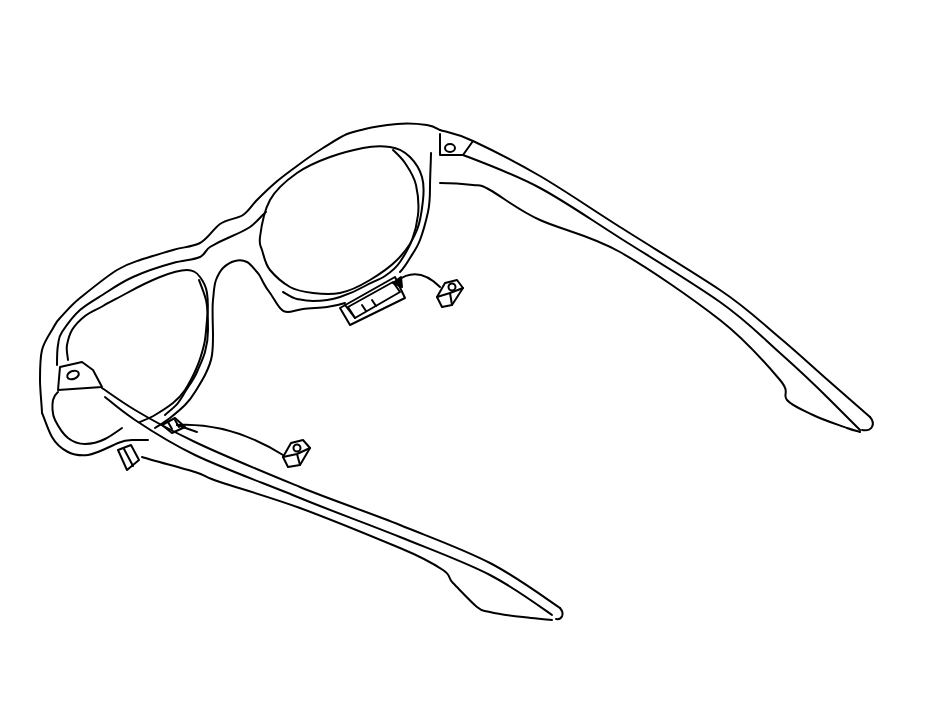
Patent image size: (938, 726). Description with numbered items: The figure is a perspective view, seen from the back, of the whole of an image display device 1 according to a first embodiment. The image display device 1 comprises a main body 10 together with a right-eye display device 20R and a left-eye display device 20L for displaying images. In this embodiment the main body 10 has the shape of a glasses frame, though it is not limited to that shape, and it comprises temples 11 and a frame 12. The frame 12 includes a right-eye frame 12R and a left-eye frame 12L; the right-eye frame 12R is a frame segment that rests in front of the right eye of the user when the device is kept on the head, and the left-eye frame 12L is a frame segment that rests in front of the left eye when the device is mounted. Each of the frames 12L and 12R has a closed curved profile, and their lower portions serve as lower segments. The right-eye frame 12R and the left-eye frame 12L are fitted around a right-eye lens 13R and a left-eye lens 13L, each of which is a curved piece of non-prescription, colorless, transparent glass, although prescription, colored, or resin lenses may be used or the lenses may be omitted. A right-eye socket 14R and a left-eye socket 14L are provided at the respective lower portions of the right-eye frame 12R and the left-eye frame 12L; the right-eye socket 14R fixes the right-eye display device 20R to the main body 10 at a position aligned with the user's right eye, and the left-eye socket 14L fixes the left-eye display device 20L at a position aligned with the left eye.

The image display device 1 is at (451, 73).
The main body 10 is at (443, 124).
The temples 11 is at (560, 213).
The frame 12 is at (231, 198).
The left-eye frame 12L is at (117, 268).
The right-eye frame 12R is at (326, 141).
The left-eye lens 13L is at (170, 388).
The right-eye lens 13R is at (383, 228).
The left-eye socket 14L is at (135, 470).
The right-eye socket 14R is at (370, 316).
The left-eye display device 20L is at (310, 441).
The right-eye display device 20R is at (465, 293).